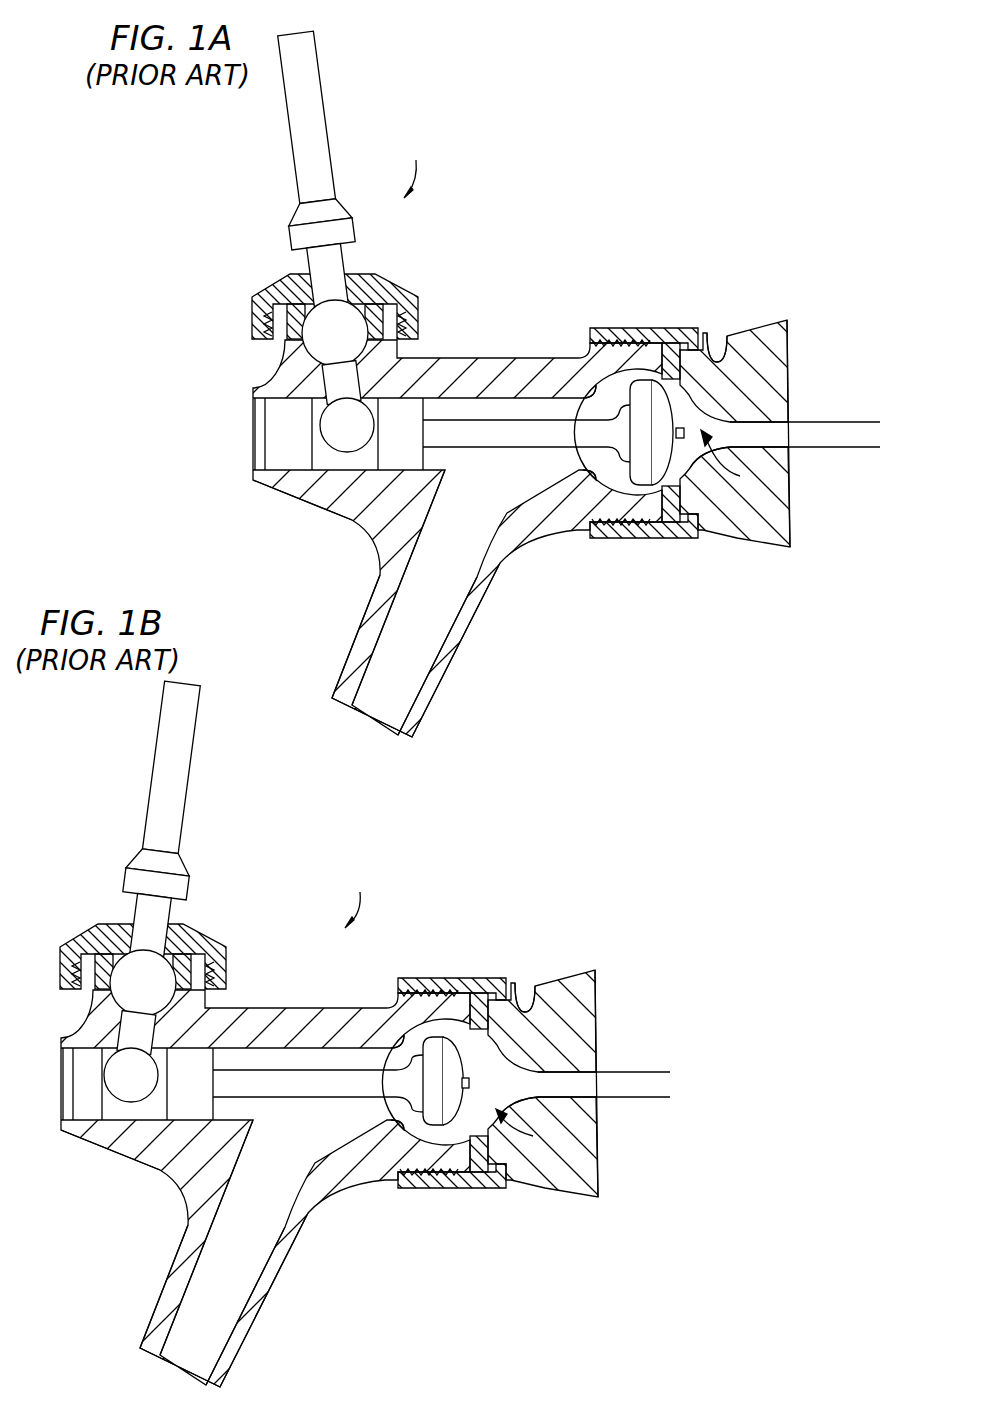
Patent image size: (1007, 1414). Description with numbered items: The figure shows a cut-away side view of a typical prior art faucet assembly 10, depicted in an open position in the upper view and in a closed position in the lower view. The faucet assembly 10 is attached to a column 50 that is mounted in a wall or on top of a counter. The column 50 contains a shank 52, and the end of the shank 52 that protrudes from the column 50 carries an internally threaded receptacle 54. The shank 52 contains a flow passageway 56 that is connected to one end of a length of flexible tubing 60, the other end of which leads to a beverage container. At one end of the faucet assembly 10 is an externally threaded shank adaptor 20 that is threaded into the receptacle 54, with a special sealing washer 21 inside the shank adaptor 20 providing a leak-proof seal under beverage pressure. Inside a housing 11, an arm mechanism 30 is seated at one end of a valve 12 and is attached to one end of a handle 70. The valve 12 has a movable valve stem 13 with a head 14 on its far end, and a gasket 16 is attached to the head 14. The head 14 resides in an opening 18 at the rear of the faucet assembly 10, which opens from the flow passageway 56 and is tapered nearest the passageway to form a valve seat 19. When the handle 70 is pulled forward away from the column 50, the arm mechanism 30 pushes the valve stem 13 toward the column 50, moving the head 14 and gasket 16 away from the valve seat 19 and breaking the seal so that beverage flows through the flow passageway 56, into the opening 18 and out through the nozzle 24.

In FIG. 1A, the faucet assembly 10 is at (411, 164).
In FIG. 1B, the faucet assembly 10 is at (358, 896).
In FIG. 1A, the housing 11 is at (485, 358).
In FIG. 1B, the housing 11 is at (265, 1174).
In FIG. 1A, the valve 12 is at (330, 460).
In FIG. 1B, the valve 12 is at (101, 1113).
In FIG. 1A, the valve stem 13 is at (512, 448).
In FIG. 1B, the valve stem 13 is at (318, 1098).
In FIG. 1A, the head 14 is at (692, 418).
In FIG. 1B, the head 14 is at (458, 1068).
In FIG. 1A, the gasket 16 is at (643, 478).
In FIG. 1B, the gasket 16 is at (404, 1141).
In FIG. 1A, the opening 18 is at (734, 462).
In FIG. 1B, the opening 18 is at (428, 1205).
In FIG. 1A, the valve seat 19 is at (588, 462).
In FIG. 1B, the valve seat 19 is at (367, 1051).
In FIG. 1A, the shank adaptor 20 is at (604, 328).
In FIG. 1B, the shank adaptor 20 is at (440, 971).
In FIG. 1A, the sealing washer 21 is at (651, 330).
In FIG. 1B, the sealing washer 21 is at (453, 983).
In FIG. 1A, the nozzle 24 is at (423, 633).
In FIG. 1B, the nozzle 24 is at (224, 1253).
In FIG. 1A, the arm mechanism 30 is at (352, 442).
In FIG. 1B, the arm mechanism 30 is at (137, 1088).
In FIG. 1A, the column 50 is at (778, 322).
In FIG. 1B, the column 50 is at (555, 1062).
In FIG. 1A, the shank 52 is at (710, 336).
In FIG. 1B, the shank 52 is at (535, 977).
In FIG. 1A, the receptacle 54 is at (648, 540).
In FIG. 1B, the receptacle 54 is at (452, 1209).
In FIG. 1A, the flow passageway 56 is at (772, 450).
In FIG. 1B, the flow passageway 56 is at (576, 1139).
In FIG. 1A, the flexible tubing 60 is at (840, 422).
In FIG. 1B, the flexible tubing 60 is at (616, 1065).
In FIG. 1A, the handle 70 is at (315, 42).
In FIG. 1B, the handle 70 is at (165, 697).